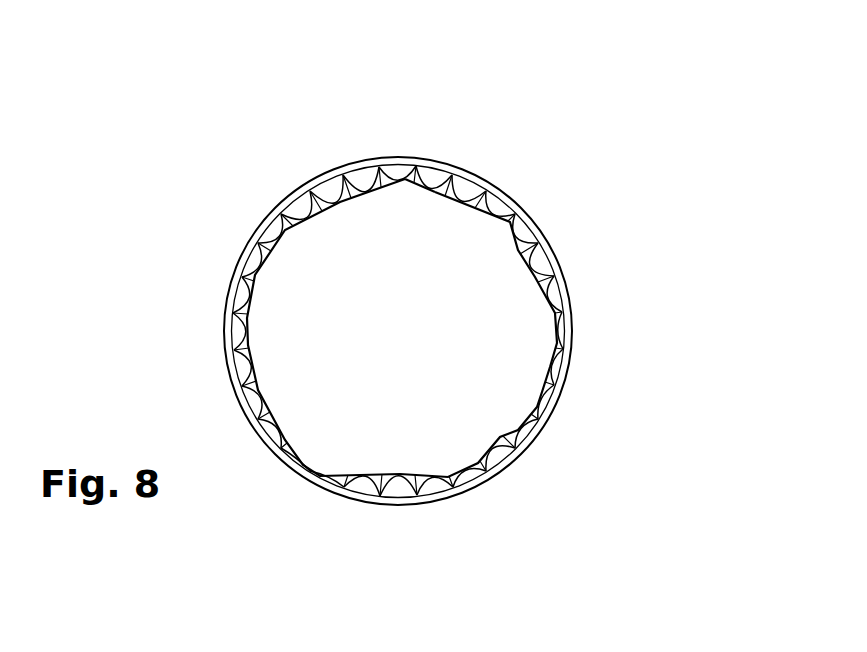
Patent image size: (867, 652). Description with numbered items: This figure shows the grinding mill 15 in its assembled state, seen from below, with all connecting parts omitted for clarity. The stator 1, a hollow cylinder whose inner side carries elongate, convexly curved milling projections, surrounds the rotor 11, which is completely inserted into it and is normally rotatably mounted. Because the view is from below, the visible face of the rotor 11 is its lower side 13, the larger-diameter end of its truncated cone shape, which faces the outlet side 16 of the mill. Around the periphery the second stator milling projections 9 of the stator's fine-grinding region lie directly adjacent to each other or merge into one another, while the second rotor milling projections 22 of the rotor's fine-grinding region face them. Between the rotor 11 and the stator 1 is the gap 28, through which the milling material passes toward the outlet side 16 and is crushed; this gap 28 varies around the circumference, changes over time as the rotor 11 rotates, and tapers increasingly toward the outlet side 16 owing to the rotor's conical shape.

The stator 1 is at (540, 398).
The second stator milling projections 9 is at (528, 228).
The rotor 11 is at (463, 378).
The lower side 13 is at (316, 268).
The grinding mill 15 is at (287, 176).
The outlet side 16 is at (300, 340).
The second rotor milling projections 22 is at (418, 182).
The gap 28 is at (380, 177).